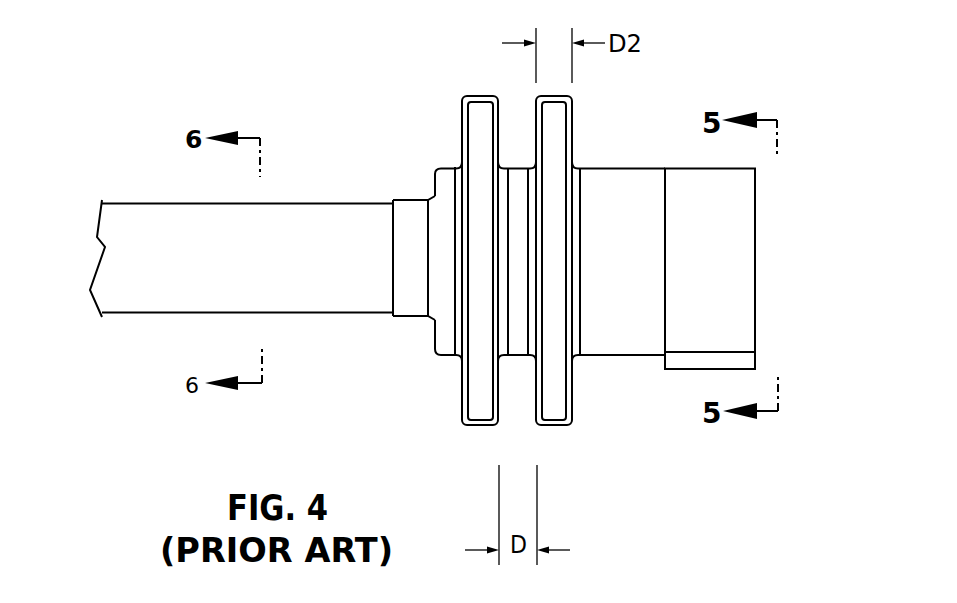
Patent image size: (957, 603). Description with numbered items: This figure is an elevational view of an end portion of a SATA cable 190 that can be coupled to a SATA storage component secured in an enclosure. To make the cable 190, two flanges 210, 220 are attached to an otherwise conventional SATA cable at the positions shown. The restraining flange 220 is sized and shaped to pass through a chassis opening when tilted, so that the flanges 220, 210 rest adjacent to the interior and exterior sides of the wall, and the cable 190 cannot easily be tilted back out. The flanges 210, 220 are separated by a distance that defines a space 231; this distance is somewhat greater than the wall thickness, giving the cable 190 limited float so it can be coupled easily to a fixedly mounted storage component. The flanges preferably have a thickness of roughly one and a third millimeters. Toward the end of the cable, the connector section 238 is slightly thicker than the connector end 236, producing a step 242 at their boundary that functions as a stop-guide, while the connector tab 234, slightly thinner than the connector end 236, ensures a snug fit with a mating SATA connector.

The SATA cable 190 is at (324, 70).
The flange 210 is at (482, 426).
The restraining flange 220 is at (555, 427).
The space 231 is at (511, 407).
The connector section 238 is at (618, 167).
The step 242 is at (665, 203).
The connector end 236 is at (757, 278).
The connector tab 234 is at (687, 369).